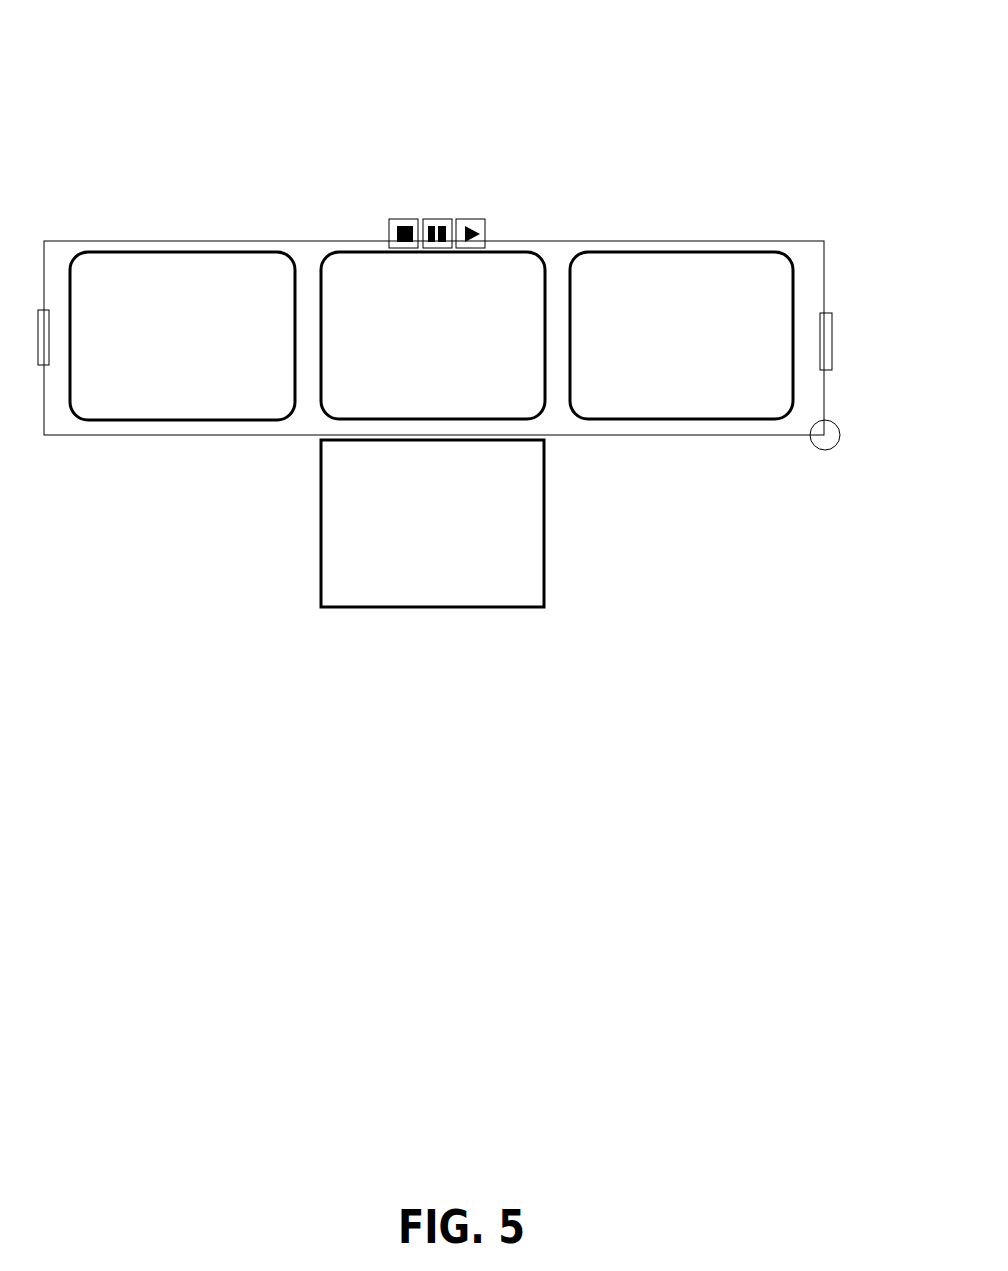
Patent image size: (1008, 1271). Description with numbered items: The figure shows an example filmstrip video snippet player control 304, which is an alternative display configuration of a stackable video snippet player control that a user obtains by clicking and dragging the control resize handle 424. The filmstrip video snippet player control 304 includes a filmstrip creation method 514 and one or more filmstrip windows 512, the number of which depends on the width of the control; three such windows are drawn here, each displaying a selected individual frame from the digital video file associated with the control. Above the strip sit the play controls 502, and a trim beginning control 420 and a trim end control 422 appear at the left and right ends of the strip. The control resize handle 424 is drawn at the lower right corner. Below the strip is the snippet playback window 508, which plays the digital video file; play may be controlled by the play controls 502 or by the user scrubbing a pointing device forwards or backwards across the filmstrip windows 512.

The filmstrip video snippet player control 304 is at (471, 321).
The filmstrip creation method 514 is at (334, 202).
The filmstrip window 512 is at (652, 372).
The play controls 502 is at (623, 167).
The trim end control 422 is at (826, 328).
The trim beginning control 420 is at (43, 365).
The control resize handle 424 is at (837, 443).
The snippet playback window 508 is at (449, 578).